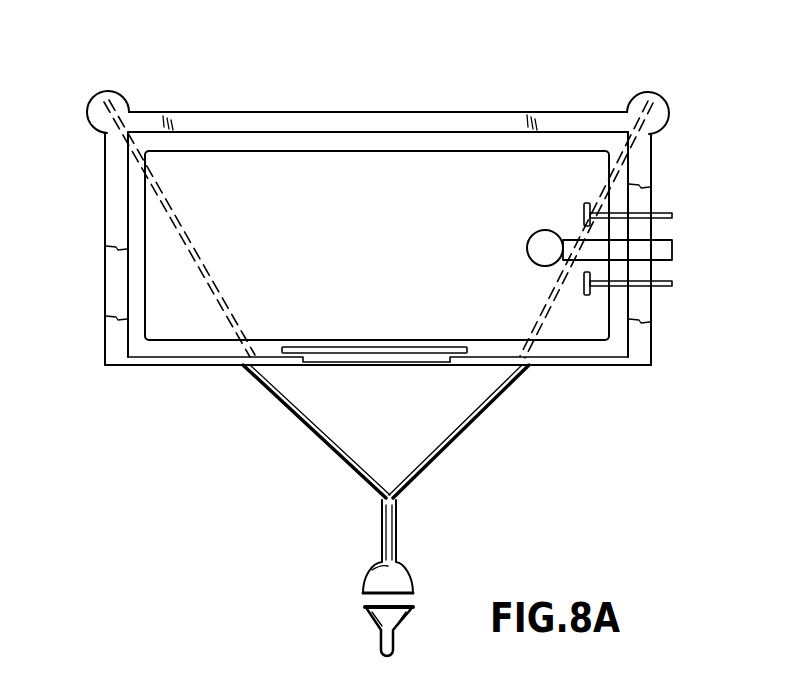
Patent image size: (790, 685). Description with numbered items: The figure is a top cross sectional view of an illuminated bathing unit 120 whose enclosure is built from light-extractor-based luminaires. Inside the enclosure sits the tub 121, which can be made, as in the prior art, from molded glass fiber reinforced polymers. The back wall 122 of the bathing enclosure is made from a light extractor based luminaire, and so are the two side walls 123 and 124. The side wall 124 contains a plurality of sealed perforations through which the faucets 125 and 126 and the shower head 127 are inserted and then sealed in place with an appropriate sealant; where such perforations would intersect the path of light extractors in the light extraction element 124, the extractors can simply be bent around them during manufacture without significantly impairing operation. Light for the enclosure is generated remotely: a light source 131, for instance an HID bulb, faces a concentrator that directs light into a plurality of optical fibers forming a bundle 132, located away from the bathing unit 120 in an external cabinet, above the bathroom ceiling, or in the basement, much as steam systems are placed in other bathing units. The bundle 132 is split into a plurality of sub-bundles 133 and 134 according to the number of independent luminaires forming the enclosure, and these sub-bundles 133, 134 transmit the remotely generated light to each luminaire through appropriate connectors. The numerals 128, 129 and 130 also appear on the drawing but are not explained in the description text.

The bathing unit 120 is at (163, 90).
The tub 121 is at (390, 227).
The back wall 122 is at (582, 118).
The side wall 123 is at (117, 285).
The side wall 124 is at (638, 167).
The faucet 125 is at (585, 213).
The faucet 126 is at (565, 280).
The shower head 127 is at (527, 242).
The bottom frame bar right portion 128 is at (585, 367).
The plate 129 is at (381, 347).
The bottom frame bar 130 is at (163, 365).
The light source 131 is at (378, 637).
The optical fiber bundle 132 is at (370, 580).
The sub-bundle 133 is at (292, 413).
The sub-bundle 134 is at (453, 442).